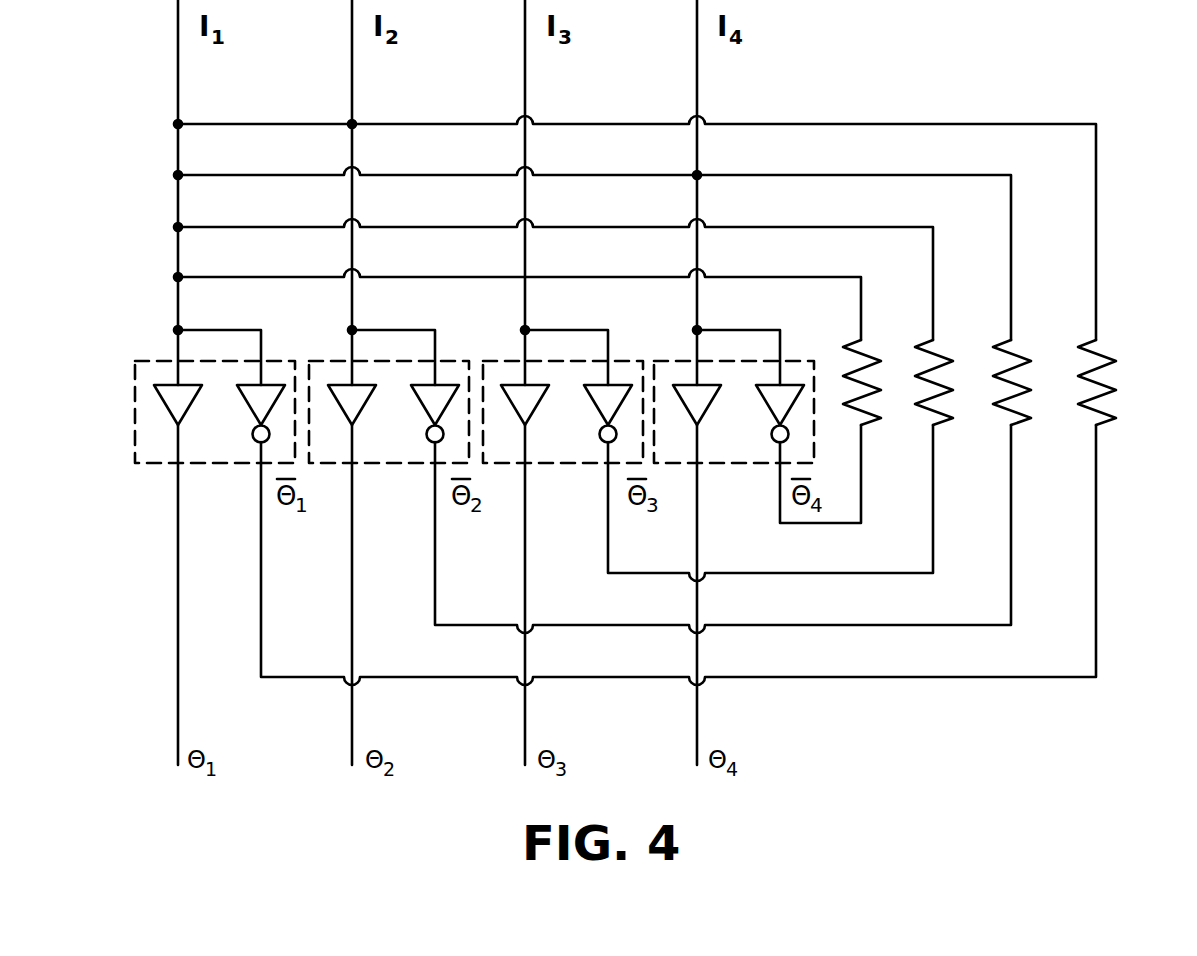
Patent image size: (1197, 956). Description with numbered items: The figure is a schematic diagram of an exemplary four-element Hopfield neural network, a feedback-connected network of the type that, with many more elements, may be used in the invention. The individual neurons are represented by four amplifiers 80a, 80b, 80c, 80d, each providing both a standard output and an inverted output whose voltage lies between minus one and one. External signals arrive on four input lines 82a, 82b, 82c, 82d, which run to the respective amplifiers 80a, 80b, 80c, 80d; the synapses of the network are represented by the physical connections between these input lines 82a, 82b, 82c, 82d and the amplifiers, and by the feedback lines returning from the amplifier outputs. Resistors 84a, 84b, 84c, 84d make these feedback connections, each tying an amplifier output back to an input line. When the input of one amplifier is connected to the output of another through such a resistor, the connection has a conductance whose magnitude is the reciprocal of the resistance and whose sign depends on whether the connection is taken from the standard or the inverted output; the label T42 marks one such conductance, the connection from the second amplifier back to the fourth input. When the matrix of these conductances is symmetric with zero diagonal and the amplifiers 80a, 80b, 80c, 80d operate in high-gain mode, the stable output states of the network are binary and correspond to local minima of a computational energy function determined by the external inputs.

The input line 82a is at (178, 38).
The input line 82b is at (352, 38).
The input line 82c is at (525, 38).
The input line 82d is at (697, 38).
The amplifier 80a is at (135, 386).
The amplifier 80b is at (377, 465).
The amplifier 80c is at (553, 465).
The amplifier 80d is at (717, 465).
The resistor 84a is at (883, 349).
The resistor 84b is at (955, 349).
The resistor 84c is at (1033, 349).
The resistor 84d is at (1118, 349).
The conductance of the connection T42 is at (594, 386).